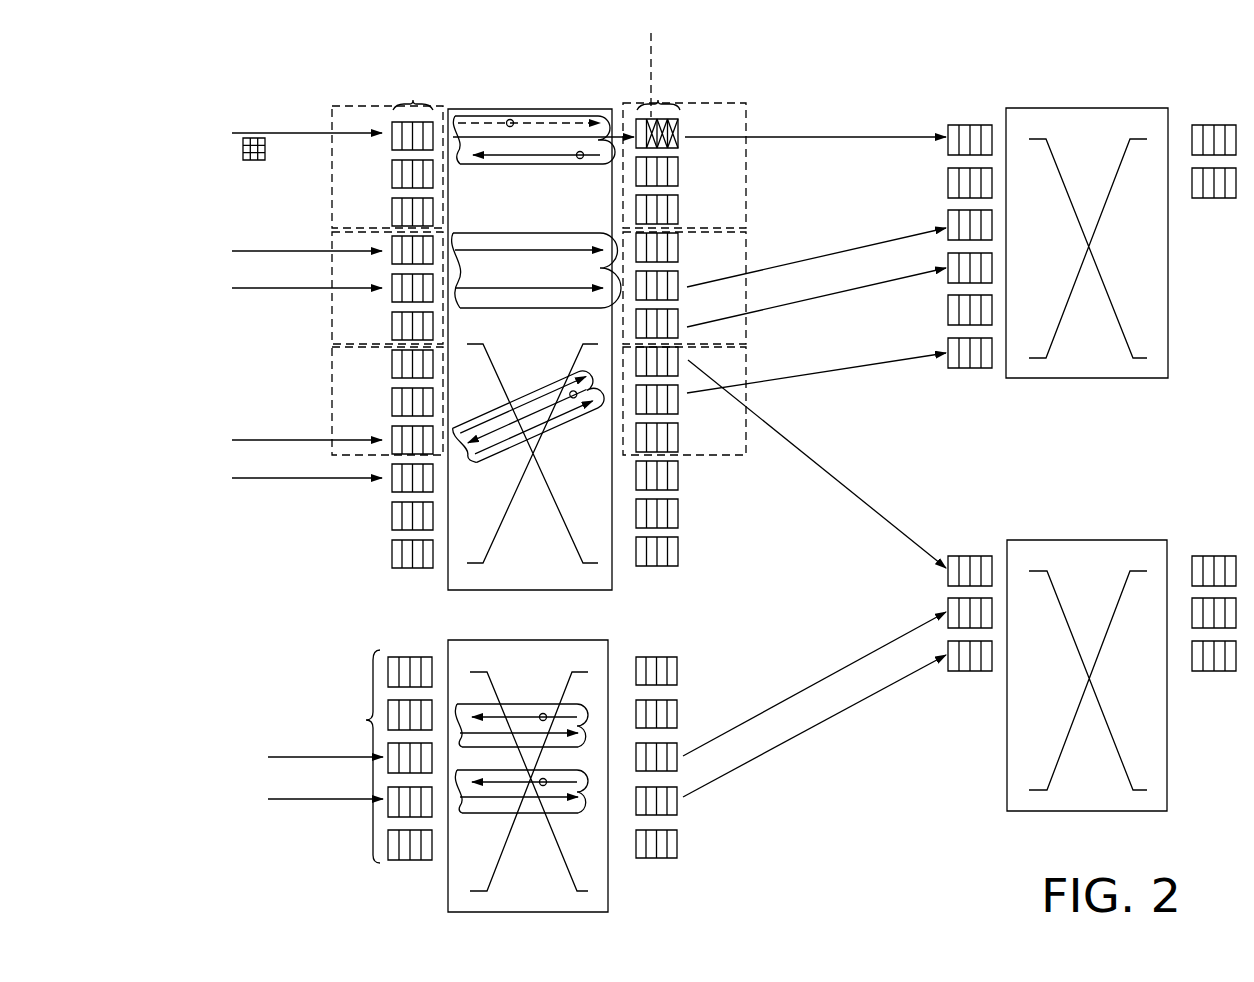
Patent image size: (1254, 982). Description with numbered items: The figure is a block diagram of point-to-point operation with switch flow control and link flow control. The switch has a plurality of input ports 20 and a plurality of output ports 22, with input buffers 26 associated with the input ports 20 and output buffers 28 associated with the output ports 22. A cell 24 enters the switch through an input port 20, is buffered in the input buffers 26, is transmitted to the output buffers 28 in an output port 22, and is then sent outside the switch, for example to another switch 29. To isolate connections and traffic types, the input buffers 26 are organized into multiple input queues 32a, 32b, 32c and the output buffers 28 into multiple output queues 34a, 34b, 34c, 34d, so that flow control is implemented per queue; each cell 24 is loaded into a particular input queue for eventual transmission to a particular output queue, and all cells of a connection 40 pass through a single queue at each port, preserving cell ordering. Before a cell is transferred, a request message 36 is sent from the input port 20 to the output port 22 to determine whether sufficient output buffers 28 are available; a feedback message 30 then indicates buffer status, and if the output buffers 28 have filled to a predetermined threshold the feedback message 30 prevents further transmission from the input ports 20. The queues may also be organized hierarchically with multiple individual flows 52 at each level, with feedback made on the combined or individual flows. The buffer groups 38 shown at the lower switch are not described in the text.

The input port 20 is at (356, 105).
The output port 22 is at (748, 178).
The cell 24 is at (248, 162).
The input buffers 26 is at (430, 126).
The output buffers 28 is at (688, 127).
The another switch 29 is at (1093, 108).
The feedback message 30 is at (580, 152).
The input queue 32a is at (420, 104).
The input queue 32b is at (386, 178).
The input queue 32c is at (386, 216).
The output queue 34a is at (653, 105).
The output queue 34b is at (689, 176).
The output queue 34c is at (687, 214).
The output queue 34d is at (689, 252).
The request message 36 is at (512, 108).
The input buffers 38 is at (350, 756).
The connection 40 is at (540, 112).
The individual flows 52 is at (508, 702).